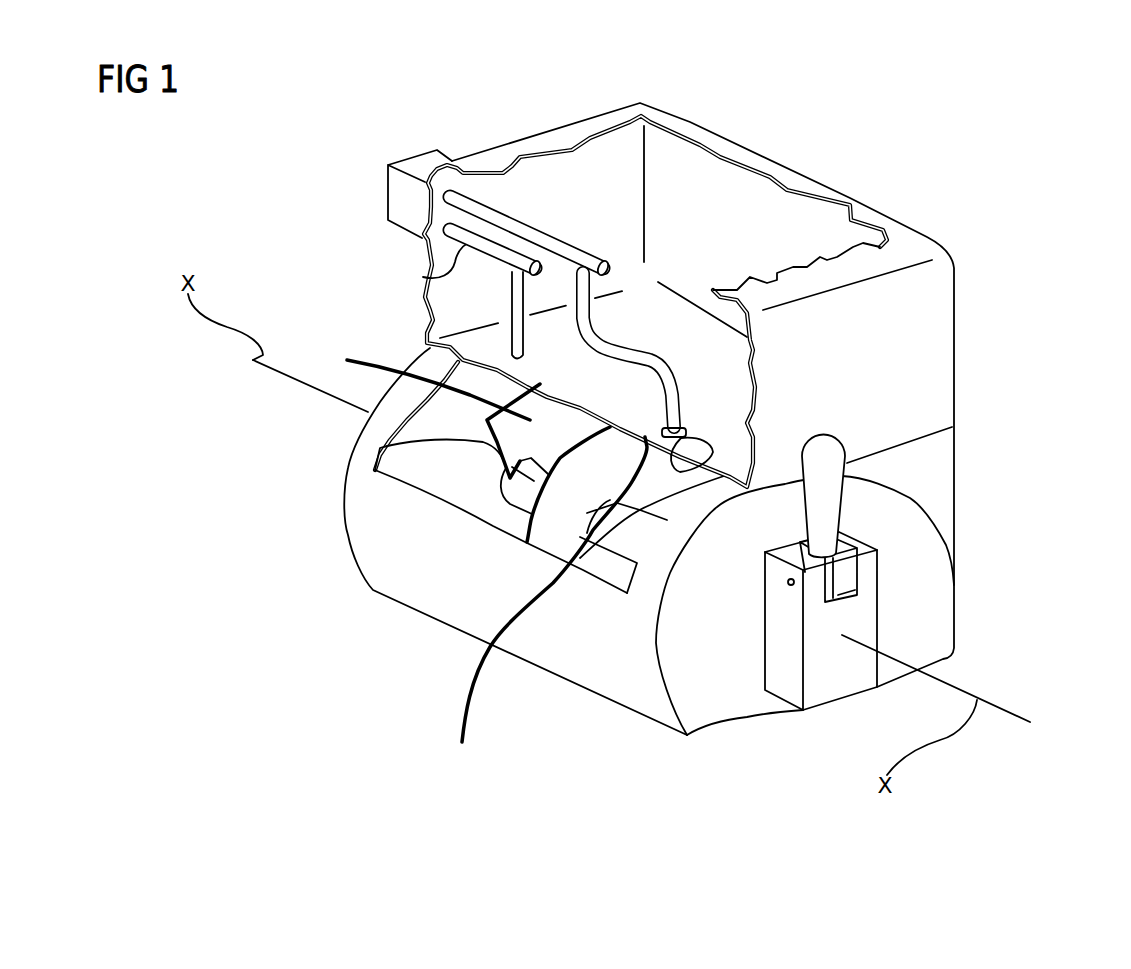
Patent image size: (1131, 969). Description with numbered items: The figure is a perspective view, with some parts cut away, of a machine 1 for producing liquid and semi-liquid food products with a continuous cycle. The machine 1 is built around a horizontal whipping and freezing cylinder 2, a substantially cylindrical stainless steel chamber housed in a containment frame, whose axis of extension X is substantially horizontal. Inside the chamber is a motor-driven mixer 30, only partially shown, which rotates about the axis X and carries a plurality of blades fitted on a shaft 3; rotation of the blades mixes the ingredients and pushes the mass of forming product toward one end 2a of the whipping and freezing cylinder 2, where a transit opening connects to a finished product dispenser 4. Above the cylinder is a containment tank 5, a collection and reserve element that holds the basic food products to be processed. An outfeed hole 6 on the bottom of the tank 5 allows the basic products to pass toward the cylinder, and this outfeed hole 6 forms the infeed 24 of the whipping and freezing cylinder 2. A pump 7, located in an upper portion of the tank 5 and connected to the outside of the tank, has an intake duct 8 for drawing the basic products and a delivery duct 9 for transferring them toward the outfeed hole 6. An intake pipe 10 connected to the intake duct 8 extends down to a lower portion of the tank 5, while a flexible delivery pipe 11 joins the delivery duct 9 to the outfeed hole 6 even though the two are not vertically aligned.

The machine for producing liquid and semi-liquid food products 1 is at (923, 133).
The whipping and freezing cylinder 2 is at (445, 575).
The end of the whipping and freezing cylinder 2a is at (663, 675).
The shaft 3 is at (378, 450).
The finished product dispenser 4 is at (858, 613).
The containment tank 5 is at (895, 342).
The outfeed hole 6 is at (664, 452).
The pump 7 is at (403, 198).
The intake duct 8 is at (423, 277).
The delivery duct 9 is at (510, 218).
The intake pipe 10 is at (502, 297).
The flexible delivery pipe 11 is at (641, 357).
The infeed of the whipping and freezing cylinder 24 is at (546, 608).
The motor-driven mixer 30 is at (424, 410).